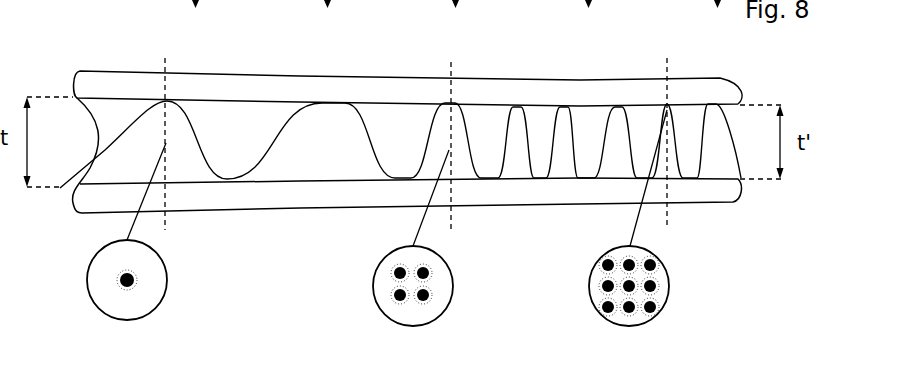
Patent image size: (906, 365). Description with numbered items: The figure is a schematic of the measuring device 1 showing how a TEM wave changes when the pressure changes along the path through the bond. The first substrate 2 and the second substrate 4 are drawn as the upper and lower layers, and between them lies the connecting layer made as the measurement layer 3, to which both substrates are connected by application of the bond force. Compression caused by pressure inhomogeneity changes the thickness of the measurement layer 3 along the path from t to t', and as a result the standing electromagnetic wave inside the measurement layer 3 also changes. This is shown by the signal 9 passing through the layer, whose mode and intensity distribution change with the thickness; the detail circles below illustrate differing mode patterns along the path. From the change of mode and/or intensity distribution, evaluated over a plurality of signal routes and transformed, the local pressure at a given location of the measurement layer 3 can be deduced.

The measuring device 1 is at (760, 75).
The first substrate 2 is at (100, 200).
The measurement layer 3 is at (440, 104).
The second substrate 4 is at (385, 77).
The signal 9 is at (707, 140).